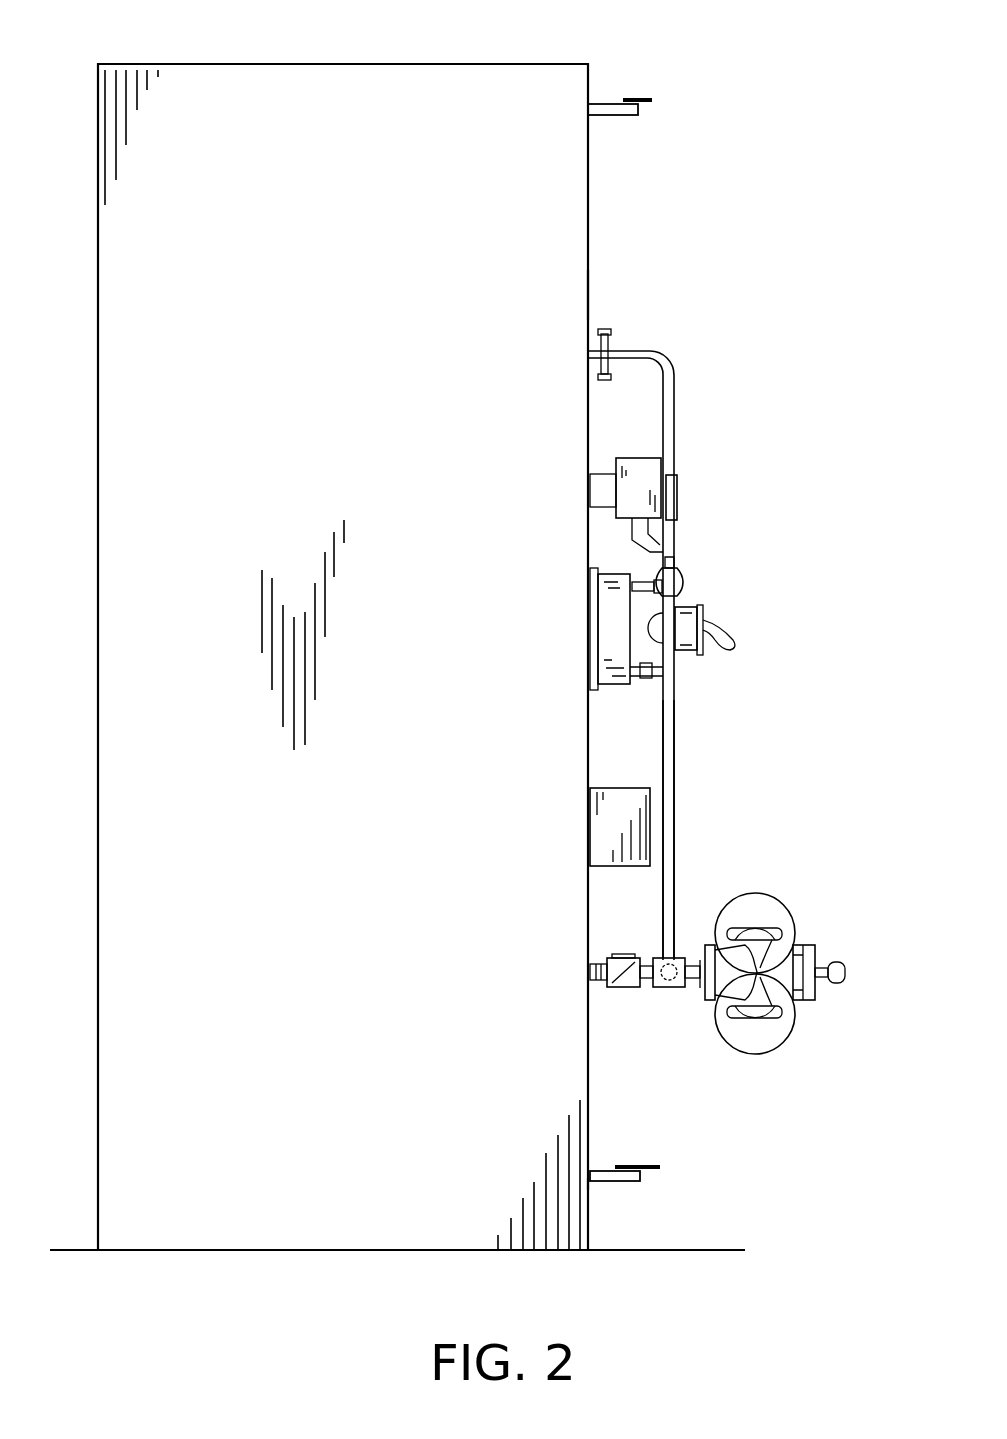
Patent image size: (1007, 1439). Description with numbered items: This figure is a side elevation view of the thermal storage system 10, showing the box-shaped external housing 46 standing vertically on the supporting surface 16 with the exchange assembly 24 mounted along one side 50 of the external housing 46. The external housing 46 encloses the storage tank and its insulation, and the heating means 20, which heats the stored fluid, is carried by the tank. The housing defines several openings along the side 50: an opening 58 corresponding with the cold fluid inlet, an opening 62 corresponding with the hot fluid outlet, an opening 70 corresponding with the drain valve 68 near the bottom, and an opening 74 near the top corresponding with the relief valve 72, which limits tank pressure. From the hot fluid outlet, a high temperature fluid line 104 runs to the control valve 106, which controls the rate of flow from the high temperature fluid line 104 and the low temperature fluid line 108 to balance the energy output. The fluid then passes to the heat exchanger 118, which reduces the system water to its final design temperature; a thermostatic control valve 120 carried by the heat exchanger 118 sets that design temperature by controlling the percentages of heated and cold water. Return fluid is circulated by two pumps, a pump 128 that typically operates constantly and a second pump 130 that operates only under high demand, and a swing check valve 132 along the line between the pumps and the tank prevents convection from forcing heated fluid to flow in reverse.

The thermal storage system 10 is at (753, 185).
The supporting surface 16 is at (80, 1247).
The heating means 20 is at (593, 864).
The exchange assembly 24 is at (683, 510).
The external housing 46 is at (588, 203).
The side of external housing 50 is at (588, 293).
The opening 58 is at (593, 980).
The opening 62 is at (588, 355).
The drain valve 68 is at (625, 1181).
The opening 70 is at (590, 1183).
The relief valve 72 is at (610, 104).
The opening 74 is at (592, 104).
The high temperature fluid line 104 is at (674, 388).
The control valve 106 is at (633, 458).
The low temperature fluid line 108 is at (674, 862).
The heat exchanger 118 is at (604, 617).
The thermostatic control valve 120 is at (705, 622).
The pump 128 is at (740, 1053).
The second pump 130 is at (780, 905).
The swing check valve 132 is at (627, 987).